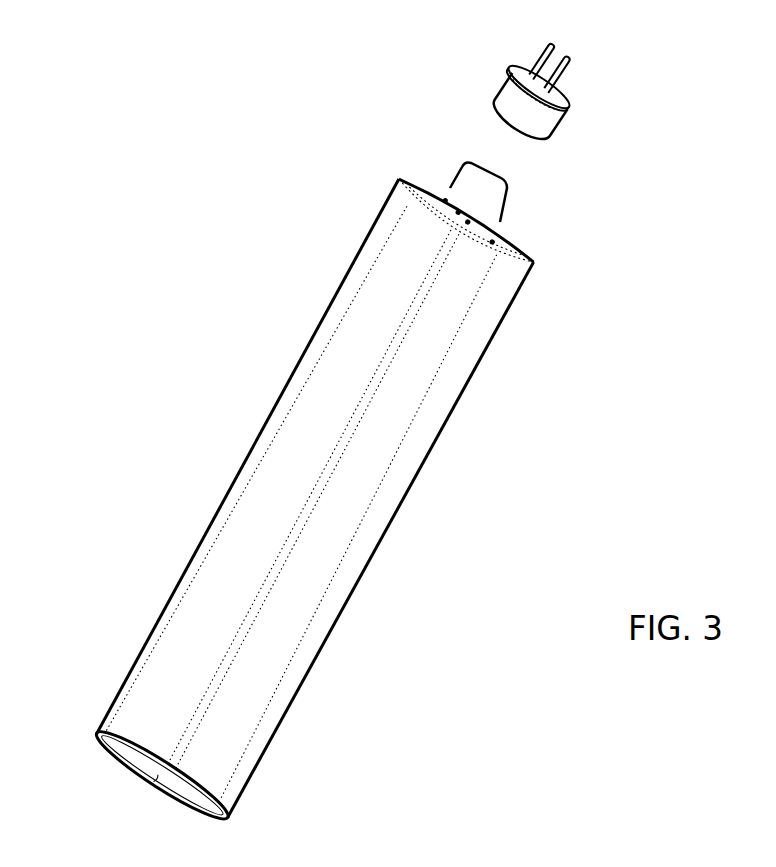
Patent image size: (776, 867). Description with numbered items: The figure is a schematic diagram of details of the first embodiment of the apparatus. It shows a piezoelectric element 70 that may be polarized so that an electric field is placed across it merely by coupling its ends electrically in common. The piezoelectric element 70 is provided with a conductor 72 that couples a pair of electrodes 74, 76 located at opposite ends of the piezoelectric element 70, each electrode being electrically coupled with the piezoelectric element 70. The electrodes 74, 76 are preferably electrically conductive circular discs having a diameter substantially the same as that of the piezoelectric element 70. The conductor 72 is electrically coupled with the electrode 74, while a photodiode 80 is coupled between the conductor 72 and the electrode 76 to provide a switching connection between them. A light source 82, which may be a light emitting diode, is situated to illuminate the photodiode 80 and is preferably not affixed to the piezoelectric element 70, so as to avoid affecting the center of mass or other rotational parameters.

The piezoelectric element 70 is at (337, 620).
The conductor 72 is at (228, 662).
The electrode 74 is at (188, 795).
The electrode 76 is at (402, 178).
The photodiode 80 is at (507, 200).
The light source 82 is at (553, 130).